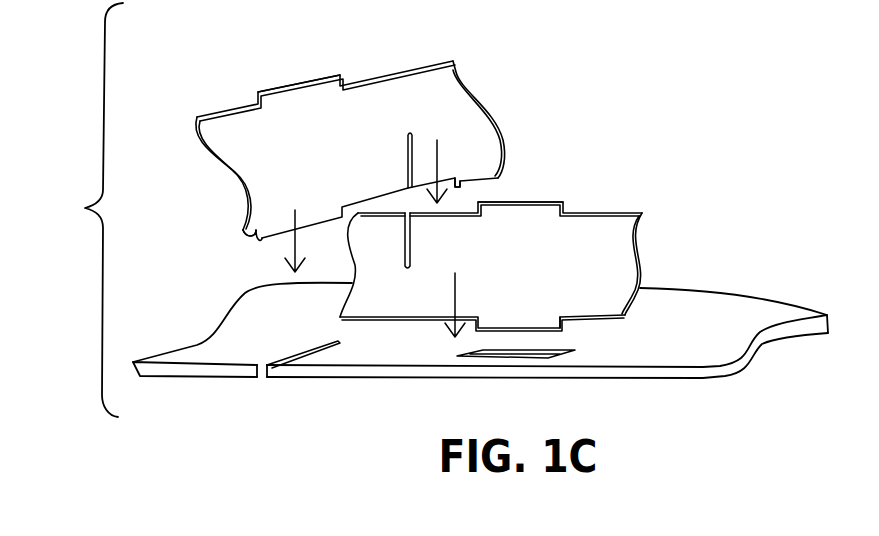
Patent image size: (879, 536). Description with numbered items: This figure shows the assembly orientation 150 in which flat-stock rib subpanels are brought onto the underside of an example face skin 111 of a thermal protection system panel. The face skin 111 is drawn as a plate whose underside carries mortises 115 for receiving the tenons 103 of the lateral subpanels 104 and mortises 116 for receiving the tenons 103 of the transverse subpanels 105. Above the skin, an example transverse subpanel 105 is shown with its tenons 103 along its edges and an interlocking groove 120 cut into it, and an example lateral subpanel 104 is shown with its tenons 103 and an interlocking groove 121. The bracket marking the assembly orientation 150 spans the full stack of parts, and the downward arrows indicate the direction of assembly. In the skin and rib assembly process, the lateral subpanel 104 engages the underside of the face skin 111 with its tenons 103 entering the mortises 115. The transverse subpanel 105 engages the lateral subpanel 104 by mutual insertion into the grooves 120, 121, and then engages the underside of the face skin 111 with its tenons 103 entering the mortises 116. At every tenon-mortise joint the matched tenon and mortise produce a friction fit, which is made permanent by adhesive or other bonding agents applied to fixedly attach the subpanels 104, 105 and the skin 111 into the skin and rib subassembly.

The tenons 103 is at (315, 80).
The lateral subpanel 104 is at (542, 283).
The transverse subpanel 105 is at (300, 149).
The face skin 111 is at (667, 349).
The mortises 115 is at (510, 358).
The mortises 116 is at (287, 353).
The interlocking grooves 120 is at (413, 138).
The interlocking grooves 121 is at (408, 234).
The assembly orientation 150 is at (71, 210).